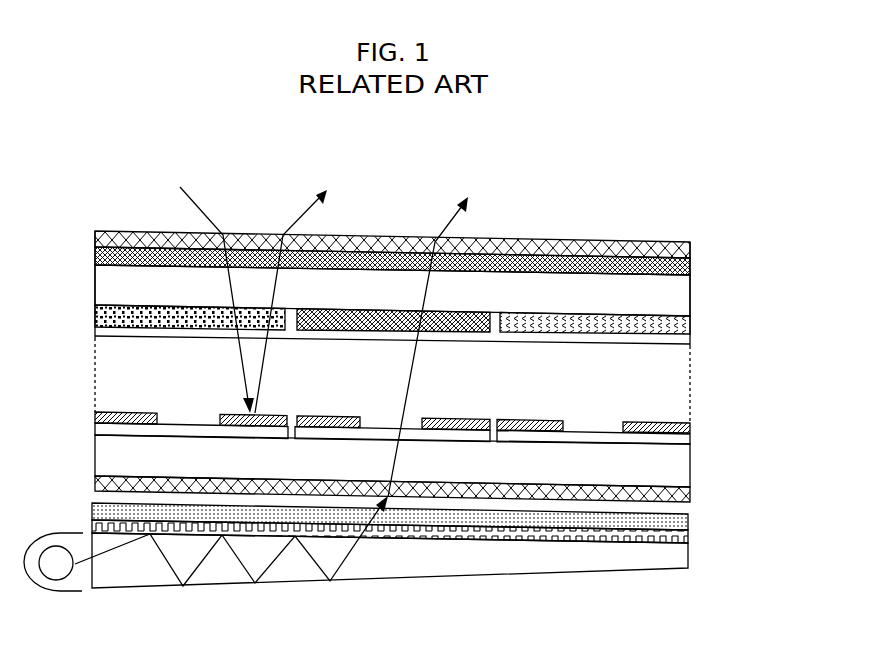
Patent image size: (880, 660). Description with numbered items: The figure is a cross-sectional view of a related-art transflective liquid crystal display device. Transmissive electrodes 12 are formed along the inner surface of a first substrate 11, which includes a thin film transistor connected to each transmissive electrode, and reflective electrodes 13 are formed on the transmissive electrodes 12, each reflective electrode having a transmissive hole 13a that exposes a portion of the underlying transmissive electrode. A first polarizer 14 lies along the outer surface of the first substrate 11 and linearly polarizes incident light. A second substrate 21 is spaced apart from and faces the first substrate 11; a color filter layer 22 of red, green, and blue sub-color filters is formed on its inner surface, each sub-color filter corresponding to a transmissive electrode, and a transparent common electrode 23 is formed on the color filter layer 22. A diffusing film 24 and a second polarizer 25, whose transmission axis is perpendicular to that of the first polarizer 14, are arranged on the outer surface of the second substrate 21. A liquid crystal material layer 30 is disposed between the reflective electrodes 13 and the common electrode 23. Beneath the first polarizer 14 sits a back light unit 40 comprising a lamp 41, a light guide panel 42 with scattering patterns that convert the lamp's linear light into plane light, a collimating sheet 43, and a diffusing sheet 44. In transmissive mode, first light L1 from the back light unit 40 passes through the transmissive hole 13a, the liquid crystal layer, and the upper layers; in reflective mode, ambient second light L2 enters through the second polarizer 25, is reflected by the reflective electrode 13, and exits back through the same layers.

The first substrate 11 is at (676, 468).
The transmissive electrodes 12 is at (97, 428).
The reflective electrodes 13 is at (120, 412).
The transmissive hole 13a is at (194, 412).
The first polarizer 14 is at (692, 497).
The second substrate 21 is at (673, 287).
The color filter layer 22 is at (148, 328).
The common electrode 23 is at (692, 345).
The diffusing film 24 is at (692, 264).
The second polarizer 25 is at (692, 245).
The liquid crystal material layer 30 is at (676, 382).
The back light unit 40 is at (398, 562).
The lamp 41 is at (62, 572).
The light guide panel 42 is at (413, 567).
The collimating sheet 43 is at (690, 541).
The diffusing sheet 44 is at (690, 525).
The first light L1 is at (434, 337).
The second light L2 is at (298, 294).